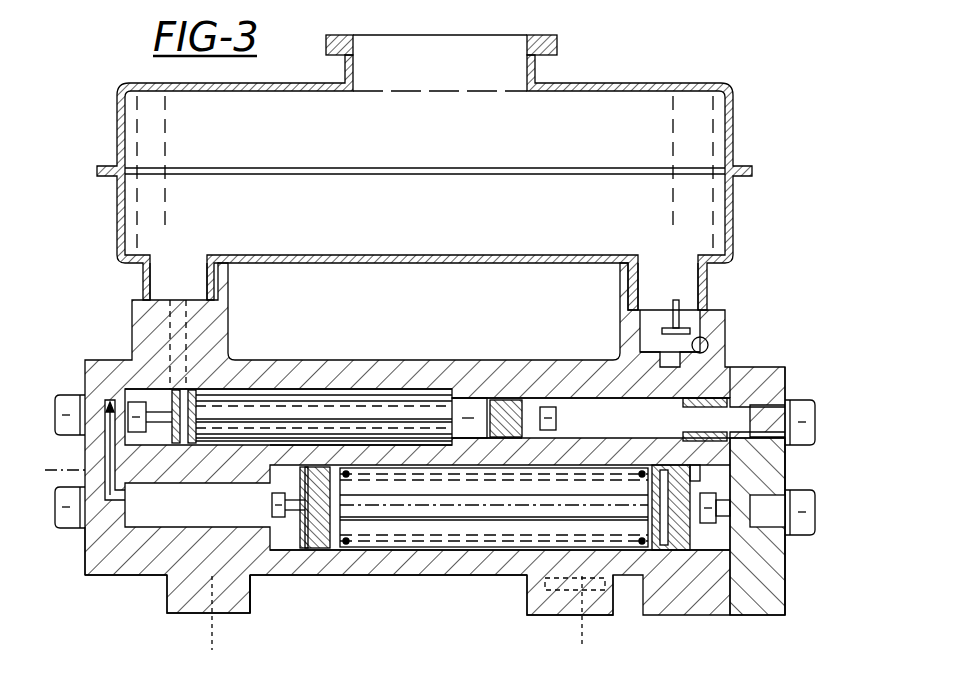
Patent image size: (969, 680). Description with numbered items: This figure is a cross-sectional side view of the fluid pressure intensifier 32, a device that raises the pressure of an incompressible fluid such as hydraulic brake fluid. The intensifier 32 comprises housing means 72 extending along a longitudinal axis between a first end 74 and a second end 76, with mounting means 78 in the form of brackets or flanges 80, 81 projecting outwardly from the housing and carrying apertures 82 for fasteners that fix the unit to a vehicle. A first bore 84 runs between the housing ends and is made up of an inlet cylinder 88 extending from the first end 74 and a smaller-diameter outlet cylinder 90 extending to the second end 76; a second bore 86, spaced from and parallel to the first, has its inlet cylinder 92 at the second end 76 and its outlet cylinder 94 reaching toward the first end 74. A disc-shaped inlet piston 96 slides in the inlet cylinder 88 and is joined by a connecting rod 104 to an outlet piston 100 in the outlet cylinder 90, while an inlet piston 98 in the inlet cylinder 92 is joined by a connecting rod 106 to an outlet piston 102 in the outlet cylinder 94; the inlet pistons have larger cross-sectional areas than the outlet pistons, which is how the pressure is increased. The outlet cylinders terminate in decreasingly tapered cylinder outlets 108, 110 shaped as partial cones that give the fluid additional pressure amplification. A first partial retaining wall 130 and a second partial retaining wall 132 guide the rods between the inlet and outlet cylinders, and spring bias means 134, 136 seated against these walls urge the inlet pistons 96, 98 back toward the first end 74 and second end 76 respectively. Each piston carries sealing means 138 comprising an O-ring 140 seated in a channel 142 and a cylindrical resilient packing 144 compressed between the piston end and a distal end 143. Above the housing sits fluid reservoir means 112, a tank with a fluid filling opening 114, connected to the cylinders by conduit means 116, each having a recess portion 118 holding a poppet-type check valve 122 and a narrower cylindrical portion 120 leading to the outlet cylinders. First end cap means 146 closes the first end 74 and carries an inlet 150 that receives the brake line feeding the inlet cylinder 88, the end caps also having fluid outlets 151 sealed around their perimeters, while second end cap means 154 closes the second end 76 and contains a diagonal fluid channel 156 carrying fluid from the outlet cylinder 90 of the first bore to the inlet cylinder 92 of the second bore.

The fluid pressure intensifier 32 is at (102, 97).
The housing means 72 is at (138, 322).
The first end 74 is at (745, 580).
The second end 76 is at (140, 572).
The mounting means 78 is at (255, 594).
The bracket or flange 80 is at (530, 613).
The bracket or flange 81 is at (175, 615).
The apertures 82 is at (391, 626).
The first bore 84 is at (380, 565).
The second bore 86 is at (313, 383).
The inlet cylinder 88 is at (460, 542).
The outlet cylinder 90 is at (250, 590).
The inlet cylinder 92 is at (275, 398).
The outlet cylinder 94 is at (565, 398).
The inlet piston 96 is at (690, 552).
The inlet piston 98 is at (205, 441).
The outlet piston 100 is at (328, 550).
The outlet piston 102 is at (500, 398).
The connecting rod 104 is at (420, 512).
The connecting rod 106 is at (400, 401).
The tapered cylinder outlet 108 is at (145, 590).
The tapered cylinder outlet 110 is at (760, 390).
The fluid reservoir means 112 is at (737, 135).
The fluid filling opening 114 is at (532, 40).
The conduit means 116 is at (186, 246).
The first recess portion 118 is at (722, 330).
The second narrower elongated cylindrical portion 120 is at (728, 375).
The check valve 122 is at (742, 308).
The first partial retaining wall 130 is at (320, 450).
The second partial retaining wall 132 is at (458, 438).
The spring bias means 134 is at (635, 575).
The spring bias means 136 is at (440, 398).
The sealing means 138 is at (720, 560).
The O-ring 140 is at (165, 413).
The channel 142 is at (692, 447).
The distal end 143 is at (760, 525).
The cylindrical resilient packing 144 is at (163, 390).
The first end cap means 146 is at (790, 605).
The inlet 150 is at (818, 520).
The fluid outlets 151 is at (818, 420).
The second end cap means 154 is at (82, 548).
The fluid channel 156 is at (86, 395).